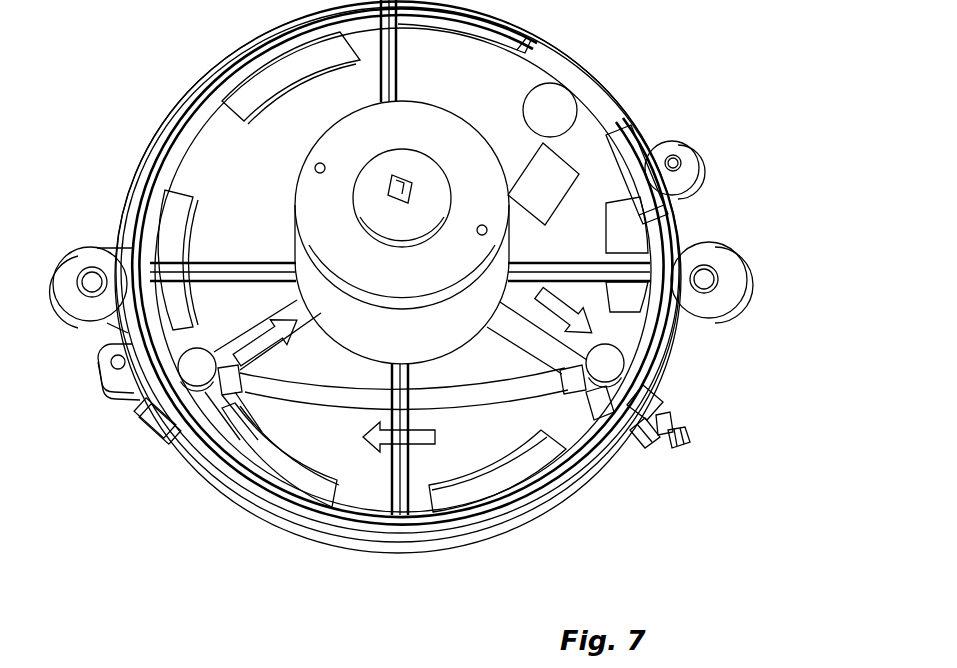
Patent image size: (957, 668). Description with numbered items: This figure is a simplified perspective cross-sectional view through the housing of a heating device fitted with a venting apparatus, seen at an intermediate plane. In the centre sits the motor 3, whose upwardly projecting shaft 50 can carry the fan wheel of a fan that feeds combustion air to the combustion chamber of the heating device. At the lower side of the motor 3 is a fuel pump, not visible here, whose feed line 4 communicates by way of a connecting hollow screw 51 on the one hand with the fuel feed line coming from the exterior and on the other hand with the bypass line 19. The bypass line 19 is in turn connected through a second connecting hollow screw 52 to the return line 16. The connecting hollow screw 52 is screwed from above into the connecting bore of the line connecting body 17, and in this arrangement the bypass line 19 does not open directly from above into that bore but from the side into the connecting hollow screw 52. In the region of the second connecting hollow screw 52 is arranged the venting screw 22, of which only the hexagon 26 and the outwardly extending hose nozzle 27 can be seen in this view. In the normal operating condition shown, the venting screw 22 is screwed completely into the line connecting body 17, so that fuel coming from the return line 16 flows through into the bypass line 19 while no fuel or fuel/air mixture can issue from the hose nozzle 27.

The motor 3 is at (395, 343).
The feed line 4 is at (300, 318).
The return line 16 is at (532, 347).
The line connecting body 17 is at (593, 408).
The bypass line 19 is at (355, 402).
The venting screw 22 is at (714, 466).
The hexagon 26 is at (647, 448).
The hose nozzle 27 is at (698, 415).
The shaft 50 is at (405, 182).
The connecting hollow screw 51 is at (197, 363).
The second connecting hollow screw 52 is at (608, 363).